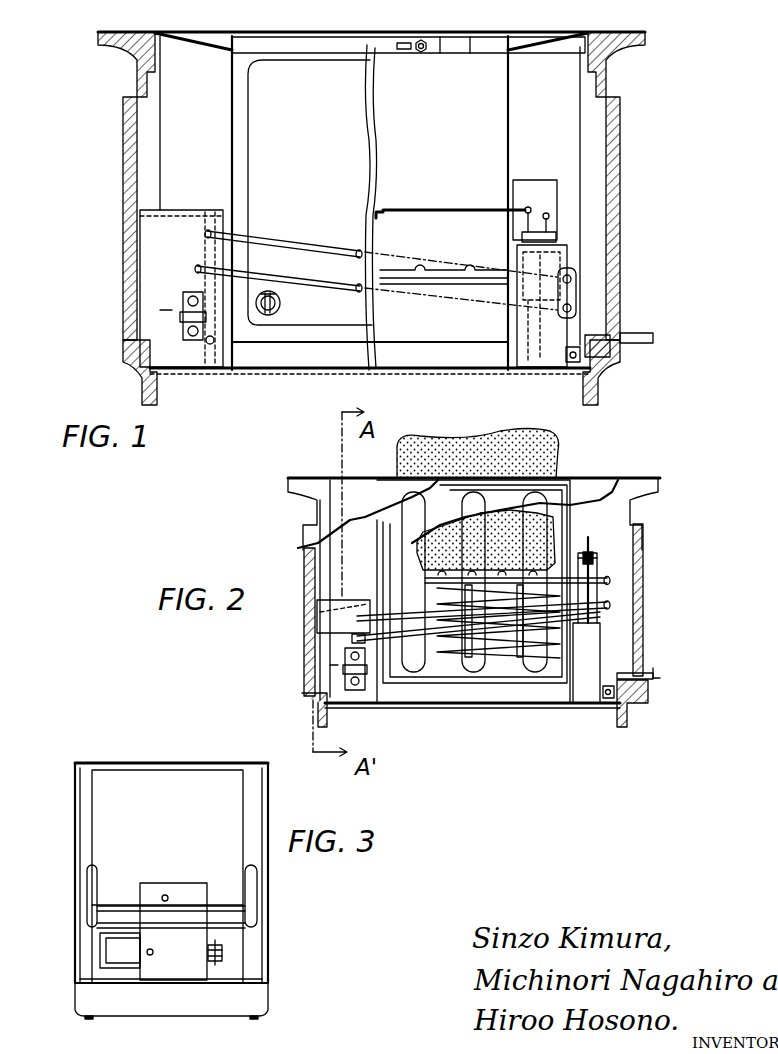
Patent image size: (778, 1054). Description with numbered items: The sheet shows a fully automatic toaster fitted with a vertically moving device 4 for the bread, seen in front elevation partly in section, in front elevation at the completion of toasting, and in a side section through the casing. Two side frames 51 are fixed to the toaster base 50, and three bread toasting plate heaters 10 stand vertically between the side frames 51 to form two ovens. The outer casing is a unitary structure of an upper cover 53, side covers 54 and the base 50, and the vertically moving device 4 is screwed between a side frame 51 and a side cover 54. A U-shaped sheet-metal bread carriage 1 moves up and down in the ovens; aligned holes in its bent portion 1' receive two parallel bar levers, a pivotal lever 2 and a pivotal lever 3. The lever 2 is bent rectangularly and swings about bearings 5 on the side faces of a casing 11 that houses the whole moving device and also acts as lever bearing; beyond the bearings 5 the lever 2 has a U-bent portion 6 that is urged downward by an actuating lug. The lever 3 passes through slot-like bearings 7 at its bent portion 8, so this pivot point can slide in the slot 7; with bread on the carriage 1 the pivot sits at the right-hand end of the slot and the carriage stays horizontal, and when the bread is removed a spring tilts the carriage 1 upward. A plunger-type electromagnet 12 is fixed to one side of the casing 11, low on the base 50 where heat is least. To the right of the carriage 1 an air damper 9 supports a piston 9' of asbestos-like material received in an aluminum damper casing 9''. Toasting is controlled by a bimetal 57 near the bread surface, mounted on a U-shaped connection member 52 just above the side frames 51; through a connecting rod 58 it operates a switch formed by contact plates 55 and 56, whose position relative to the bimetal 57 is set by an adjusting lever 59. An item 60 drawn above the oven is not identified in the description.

In FIG. 1, the bread carriage 1 is at (461, 268).
In FIG. 2, the bread carriage 1 is at (478, 582).
In FIG. 1, the bent portion of the bread carriage 1' is at (604, 293).
In FIG. 2, the bent portion of the bread carriage 1' is at (519, 607).
In FIG. 1, the pivotal lever 2 is at (298, 244).
In FIG. 2, the pivotal lever 2 is at (612, 583).
In FIG. 3, the pivotal lever 2 is at (262, 860).
In FIG. 1, the pivotal lever 3 is at (302, 270).
In FIG. 2, the pivotal lever 3 is at (610, 608).
In FIG. 3, the pivotal lever 3 is at (248, 917).
In FIG. 1, the vertically moving device 4 is at (152, 270).
In FIG. 2, the vertically moving device 4 is at (342, 616).
In FIG. 3, the vertically moving device 4 is at (162, 885).
In FIG. 2, the bearings 5 is at (318, 615).
In FIG. 2, the U-bent portion of the pivotal lever 6 is at (317, 590).
In FIG. 3, the U-bent portion of the pivotal lever 6 is at (222, 905).
In FIG. 2, the slot-like bearings 7 is at (352, 639).
In FIG. 2, the bent portion of the pivotal lever 8 is at (350, 645).
In FIG. 3, the bent portion of the pivotal lever 8 is at (238, 930).
In FIG. 1, the air damper 9 is at (582, 302).
In FIG. 2, the air damper 9 is at (624, 663).
In FIG. 2, the piston 9' is at (593, 568).
In FIG. 2, the damper casing 9'' is at (601, 717).
In FIG. 2, the bread toasting plate heaters 10 is at (541, 660).
In FIG. 1, the casing 11 is at (150, 330).
In FIG. 2, the casing 11 is at (358, 691).
In FIG. 3, the casing 11 is at (193, 893).
In FIG. 3, the plunger type electromagnet 12 is at (122, 952).
In FIG. 1, the toaster base 50 is at (447, 320).
In FIG. 1, the side frames 51 is at (232, 126).
In FIG. 1, the U-shaped connection member 52 is at (471, 38).
In FIG. 1, the upper cover 53 is at (281, 30).
In FIG. 1, the side covers 54 is at (98, 36).
In FIG. 1, the contact plate 55 is at (530, 205).
In FIG. 1, the contact plate 56 is at (552, 228).
In FIG. 1, the bimetal means 57 is at (366, 105).
In FIG. 1, the connecting rod 58 is at (418, 40).
In FIG. 1, the adjusting lever 59 is at (600, 338).
In FIG. 2, the food item 60 is at (550, 460).